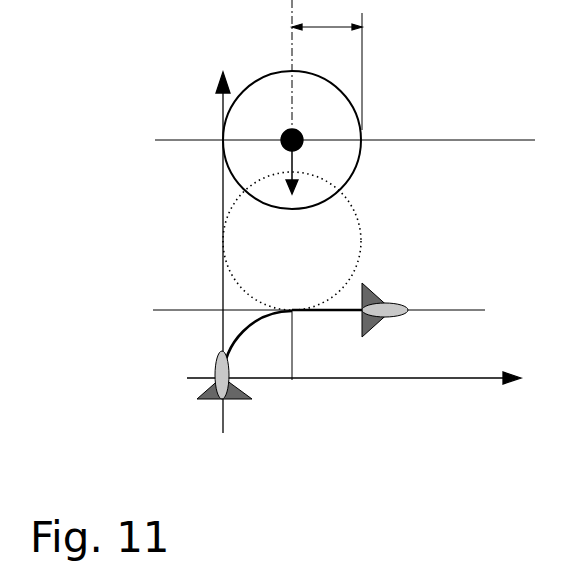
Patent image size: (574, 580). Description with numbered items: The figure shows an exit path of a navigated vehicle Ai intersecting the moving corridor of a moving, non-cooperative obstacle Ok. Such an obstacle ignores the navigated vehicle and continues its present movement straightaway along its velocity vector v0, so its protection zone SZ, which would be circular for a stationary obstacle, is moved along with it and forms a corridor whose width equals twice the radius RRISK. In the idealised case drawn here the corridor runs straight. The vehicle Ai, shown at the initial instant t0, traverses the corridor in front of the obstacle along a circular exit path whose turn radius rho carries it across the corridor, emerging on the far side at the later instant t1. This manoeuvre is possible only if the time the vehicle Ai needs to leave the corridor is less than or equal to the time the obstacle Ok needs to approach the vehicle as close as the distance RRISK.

The protection zone SZ is at (362, 126).
The moving and non-cooperative obstacle Ok is at (302, 131).
The velocity vector v0 is at (289, 180).
The risk radius RRISK is at (327, 18).
The turn radius of avoidance path rho is at (250, 336).
The navigated vehicle Ai is at (219, 395).
The initial time t0 is at (250, 414).
The later time position of aircraft t1 is at (408, 317).